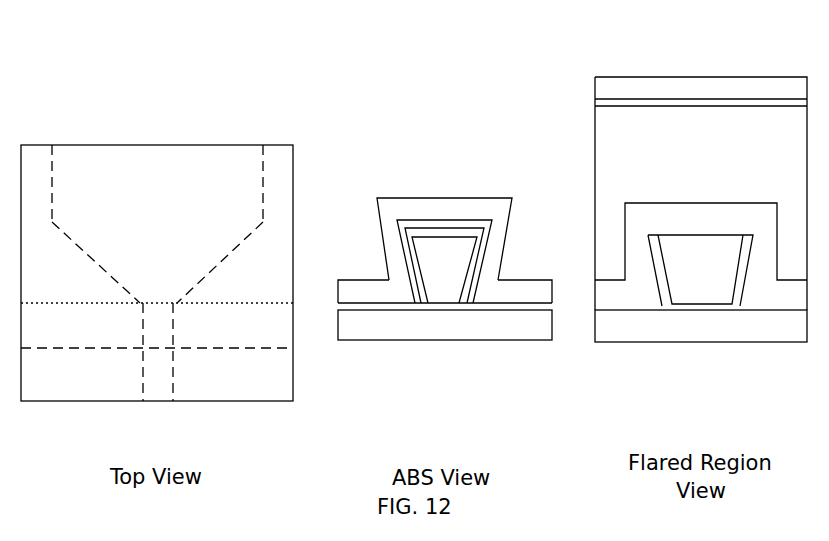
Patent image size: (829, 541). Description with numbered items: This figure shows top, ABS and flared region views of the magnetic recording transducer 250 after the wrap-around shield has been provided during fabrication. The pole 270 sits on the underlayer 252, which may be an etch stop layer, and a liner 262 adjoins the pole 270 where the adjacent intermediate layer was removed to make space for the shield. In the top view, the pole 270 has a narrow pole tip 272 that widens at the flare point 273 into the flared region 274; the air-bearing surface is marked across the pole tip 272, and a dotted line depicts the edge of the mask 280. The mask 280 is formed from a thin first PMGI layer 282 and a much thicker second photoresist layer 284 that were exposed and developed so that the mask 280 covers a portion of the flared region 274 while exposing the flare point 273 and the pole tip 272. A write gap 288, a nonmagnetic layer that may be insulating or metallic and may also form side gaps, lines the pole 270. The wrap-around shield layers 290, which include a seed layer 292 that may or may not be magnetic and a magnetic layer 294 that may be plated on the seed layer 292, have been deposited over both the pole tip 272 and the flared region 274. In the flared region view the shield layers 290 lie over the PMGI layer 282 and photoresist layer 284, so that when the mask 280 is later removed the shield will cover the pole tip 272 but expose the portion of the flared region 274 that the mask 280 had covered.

The magnetic recording transducer 250 is at (433, 33).
The underlayer 252 is at (360, 340).
The liner 262 is at (648, 252).
The pole 270 is at (157, 146).
The pole tip 272 is at (132, 338).
The flare point 273 is at (188, 312).
The flared region 274 is at (233, 263).
The mask 280 is at (280, 123).
The PMGI layer 282 is at (624, 203).
The photoresist layer 284 is at (690, 107).
The write gap 288 is at (437, 228).
The wrap-around shield layers 290 is at (263, 401).
The seed layer 292 is at (473, 310).
The magnetic layer 294 is at (443, 198).